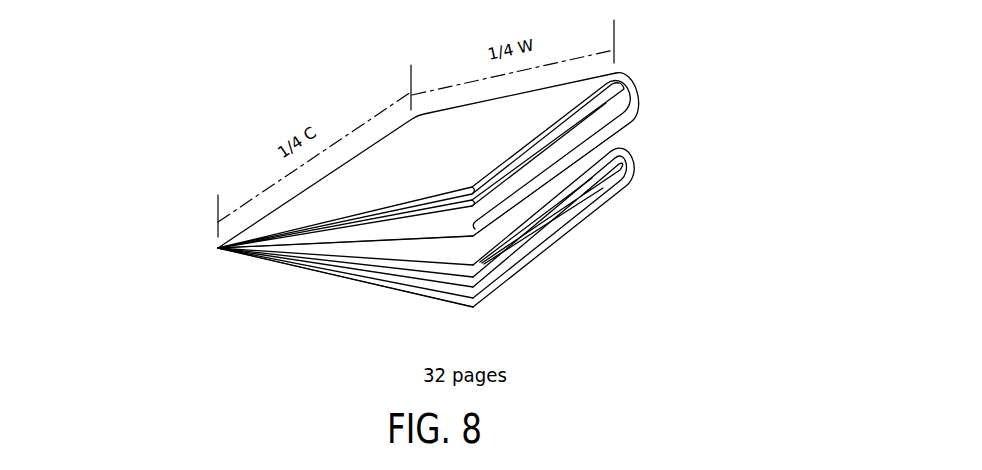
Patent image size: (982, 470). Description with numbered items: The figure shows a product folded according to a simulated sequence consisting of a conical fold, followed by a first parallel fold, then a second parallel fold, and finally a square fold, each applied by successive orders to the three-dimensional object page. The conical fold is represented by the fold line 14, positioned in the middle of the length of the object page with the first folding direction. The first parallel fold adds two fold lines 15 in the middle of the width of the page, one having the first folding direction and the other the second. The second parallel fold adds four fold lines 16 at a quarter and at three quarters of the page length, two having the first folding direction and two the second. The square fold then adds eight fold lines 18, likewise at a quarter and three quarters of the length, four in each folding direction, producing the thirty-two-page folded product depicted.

The fold line 14 is at (520, 160).
The fold lines 15 is at (395, 280).
The fold lines 16 is at (655, 155).
The fold lines 18 is at (205, 247).